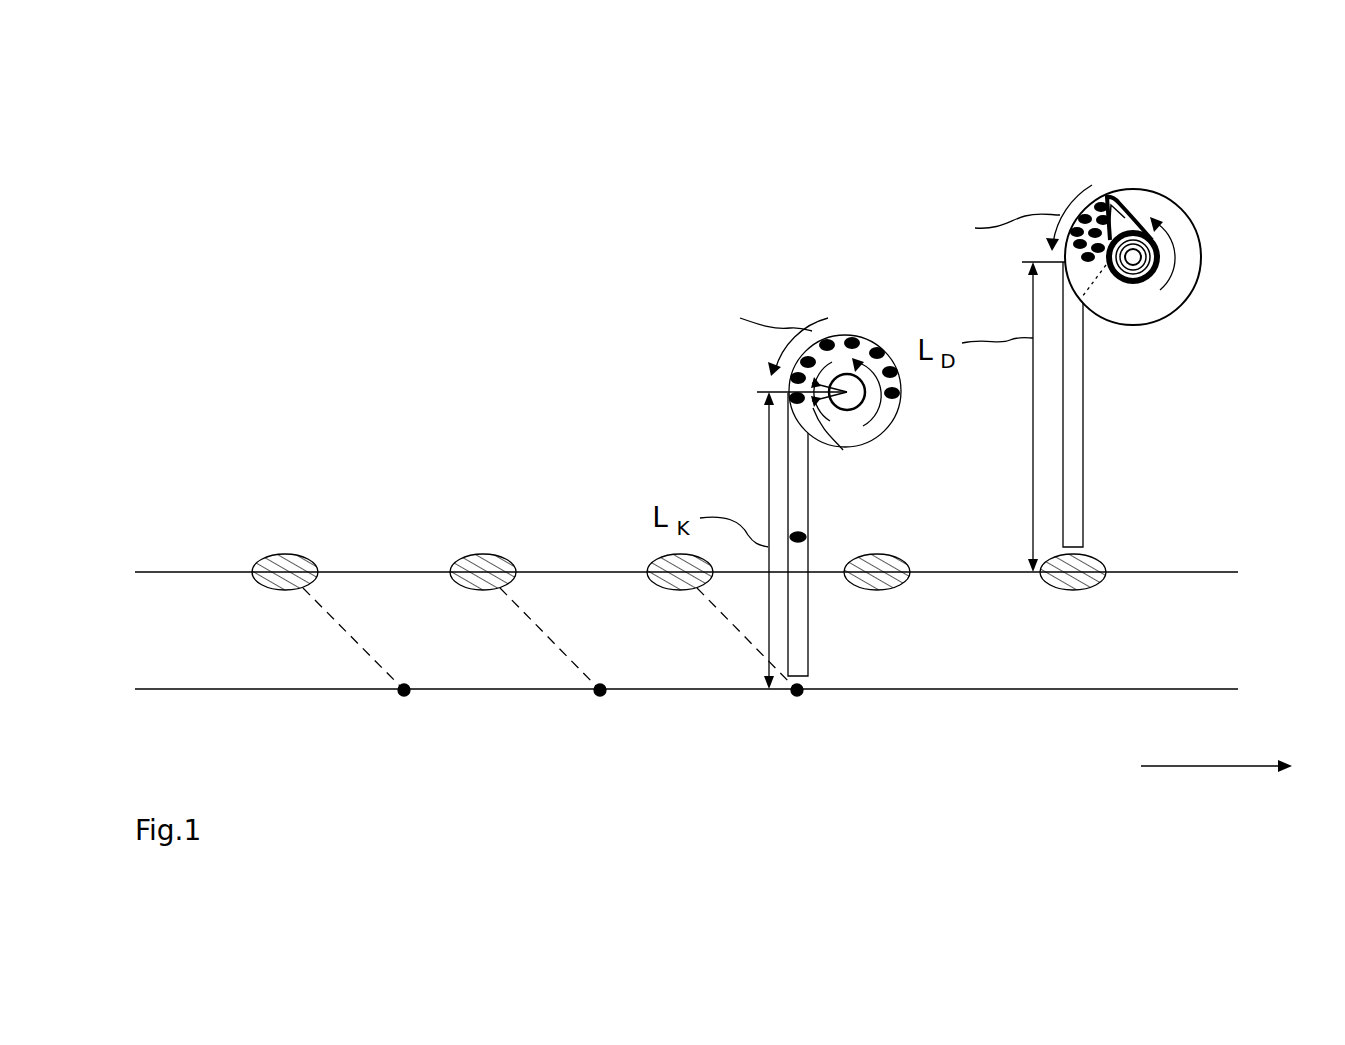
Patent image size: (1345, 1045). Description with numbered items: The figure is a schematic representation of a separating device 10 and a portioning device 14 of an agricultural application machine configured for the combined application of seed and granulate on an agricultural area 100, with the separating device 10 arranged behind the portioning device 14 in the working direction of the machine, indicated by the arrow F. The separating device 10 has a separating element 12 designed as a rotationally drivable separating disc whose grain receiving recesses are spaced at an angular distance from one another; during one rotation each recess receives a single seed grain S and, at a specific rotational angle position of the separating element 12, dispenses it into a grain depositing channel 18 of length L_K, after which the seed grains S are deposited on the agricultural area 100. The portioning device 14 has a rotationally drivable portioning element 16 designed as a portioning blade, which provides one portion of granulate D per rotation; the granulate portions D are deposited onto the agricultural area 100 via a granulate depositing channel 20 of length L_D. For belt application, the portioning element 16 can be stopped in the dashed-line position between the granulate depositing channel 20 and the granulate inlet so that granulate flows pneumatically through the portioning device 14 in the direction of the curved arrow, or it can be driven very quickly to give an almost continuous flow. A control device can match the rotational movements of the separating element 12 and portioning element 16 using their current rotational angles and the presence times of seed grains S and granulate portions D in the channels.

The agricultural area 100 is at (377, 524).
The separating device 10 is at (836, 349).
The separating element 12 is at (883, 422).
The portioning device 14 is at (1138, 213).
The portioning element 16 is at (1126, 214).
The grain depositing channel 18 is at (808, 510).
The granulate depositing channel 20 is at (1083, 417).
The granulate portion D is at (283, 553).
The seed grain S is at (402, 697).
The conveying direction F is at (1190, 768).